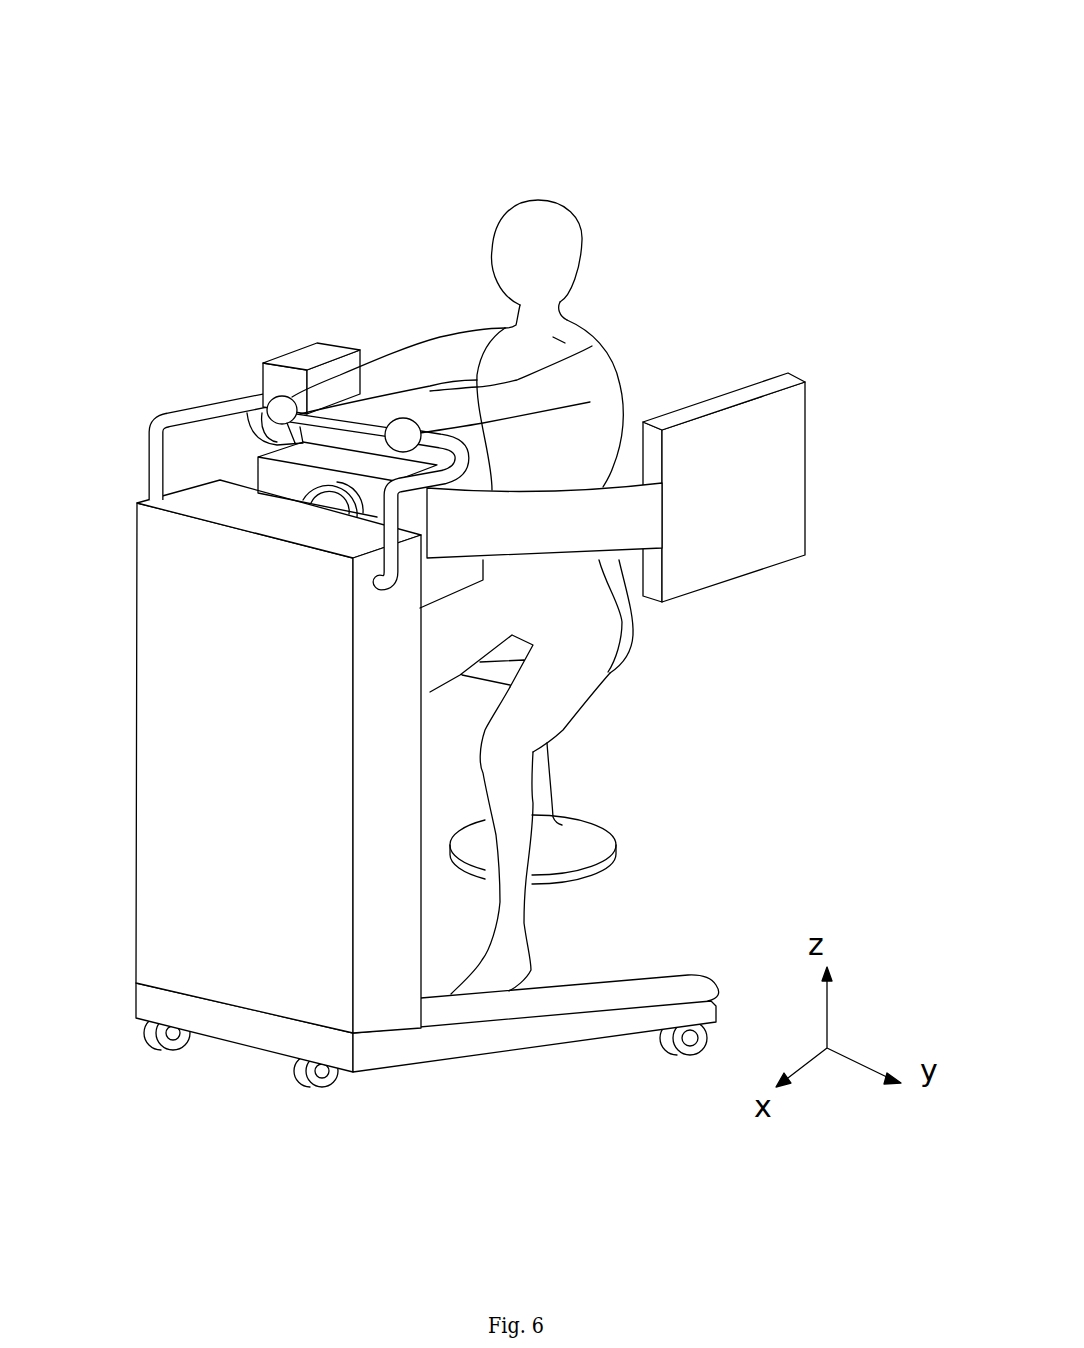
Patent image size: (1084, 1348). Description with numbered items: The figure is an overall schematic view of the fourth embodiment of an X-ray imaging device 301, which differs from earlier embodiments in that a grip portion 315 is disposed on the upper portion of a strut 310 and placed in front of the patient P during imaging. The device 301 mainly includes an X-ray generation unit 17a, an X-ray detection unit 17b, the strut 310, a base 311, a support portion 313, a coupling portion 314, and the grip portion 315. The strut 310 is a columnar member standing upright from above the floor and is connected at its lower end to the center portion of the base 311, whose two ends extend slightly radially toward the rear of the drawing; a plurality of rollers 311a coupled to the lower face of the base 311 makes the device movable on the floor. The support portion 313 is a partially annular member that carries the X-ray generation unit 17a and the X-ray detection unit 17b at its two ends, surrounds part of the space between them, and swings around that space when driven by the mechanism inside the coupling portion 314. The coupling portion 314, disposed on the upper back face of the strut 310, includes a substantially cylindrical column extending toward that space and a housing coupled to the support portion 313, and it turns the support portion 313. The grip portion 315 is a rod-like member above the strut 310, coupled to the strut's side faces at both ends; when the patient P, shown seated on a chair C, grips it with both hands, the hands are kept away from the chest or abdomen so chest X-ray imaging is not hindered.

The X-ray imaging device 301 is at (479, 616).
The strut 310 is at (252, 938).
The base 311 is at (527, 1040).
The rollers 311a is at (322, 1077).
The support portion 313 is at (638, 624).
The coupling portion 314 is at (304, 505).
The grip portion 315 is at (181, 412).
The X-ray generation unit 17a is at (322, 382).
The X-ray detection unit 17b is at (800, 493).
The patient P is at (587, 241).
The chair C is at (617, 860).